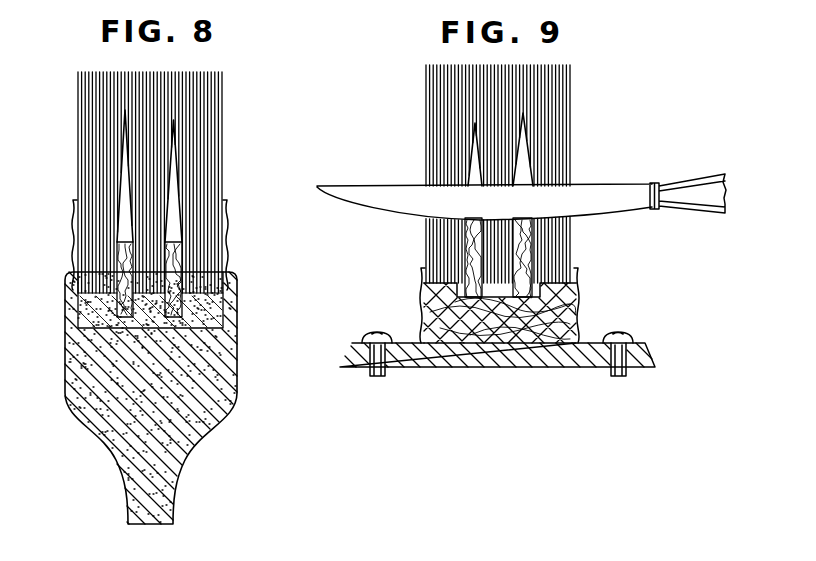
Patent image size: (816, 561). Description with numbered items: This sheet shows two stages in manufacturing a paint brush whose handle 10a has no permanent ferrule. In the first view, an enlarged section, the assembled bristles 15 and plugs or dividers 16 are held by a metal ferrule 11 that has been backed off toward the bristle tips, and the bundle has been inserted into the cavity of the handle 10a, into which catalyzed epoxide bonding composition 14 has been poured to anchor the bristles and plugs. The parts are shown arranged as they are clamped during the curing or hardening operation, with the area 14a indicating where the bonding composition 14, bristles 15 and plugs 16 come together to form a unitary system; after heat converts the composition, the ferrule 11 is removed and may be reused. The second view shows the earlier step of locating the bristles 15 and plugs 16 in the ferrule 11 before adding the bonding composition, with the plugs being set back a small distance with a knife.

In FIG. 8, the handle 10a is at (226, 378).
In FIG. 8, the ferrule 11 is at (72, 233).
In FIG. 9, the ferrule 11 is at (579, 308).
In FIG. 8, the bonding composition 14 is at (203, 309).
In FIG. 8, the area of unitary system 14a is at (207, 280).
In FIG. 8, the bristles 15 is at (224, 140).
In FIG. 9, the bristles 15 is at (575, 136).
In FIG. 8, the plugs or dividers 16 is at (174, 247).
In FIG. 9, the plugs or dividers 16 is at (534, 243).